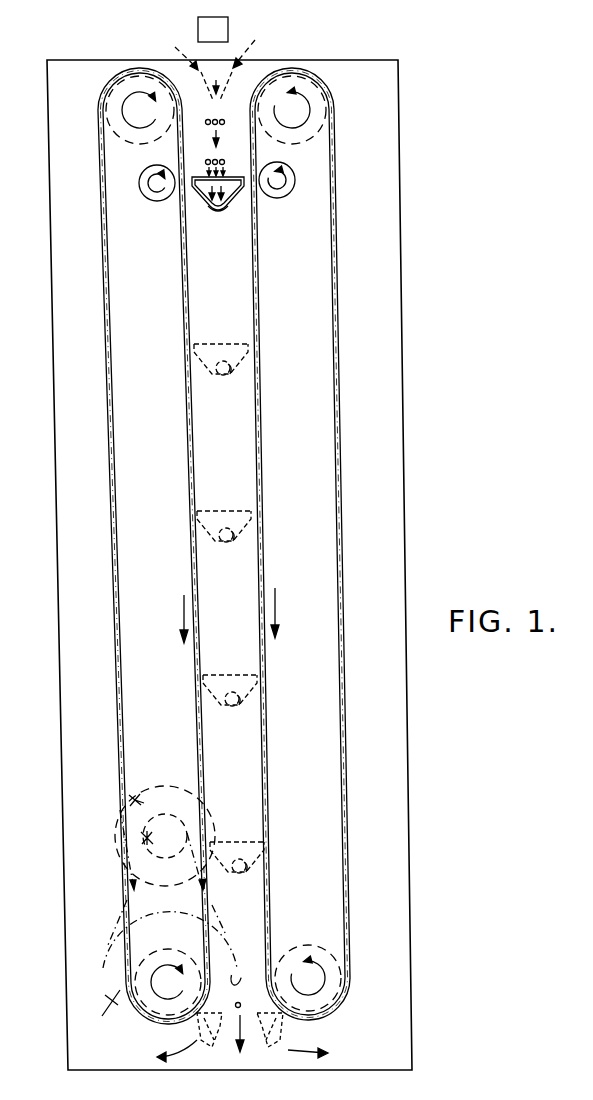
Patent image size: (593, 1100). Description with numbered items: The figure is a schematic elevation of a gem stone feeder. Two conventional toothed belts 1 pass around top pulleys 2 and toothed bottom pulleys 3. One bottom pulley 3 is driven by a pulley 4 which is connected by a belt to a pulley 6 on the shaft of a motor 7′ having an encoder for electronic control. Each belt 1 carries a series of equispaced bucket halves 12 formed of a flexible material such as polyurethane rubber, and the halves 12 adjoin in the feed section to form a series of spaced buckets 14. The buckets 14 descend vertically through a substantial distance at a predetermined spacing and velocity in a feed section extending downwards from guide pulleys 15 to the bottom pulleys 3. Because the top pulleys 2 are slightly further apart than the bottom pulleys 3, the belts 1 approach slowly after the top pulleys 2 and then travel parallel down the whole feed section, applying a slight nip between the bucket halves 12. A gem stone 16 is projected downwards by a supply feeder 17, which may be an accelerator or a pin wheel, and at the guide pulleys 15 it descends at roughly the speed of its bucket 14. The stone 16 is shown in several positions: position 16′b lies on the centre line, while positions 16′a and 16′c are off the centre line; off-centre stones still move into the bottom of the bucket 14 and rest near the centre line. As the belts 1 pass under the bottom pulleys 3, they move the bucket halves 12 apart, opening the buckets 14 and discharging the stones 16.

The toothed belt 1 is at (193, 438).
The top pulley 2 is at (122, 90).
The bottom pulley 3 is at (144, 1006).
The pulley 4 is at (102, 1013).
The pulley 6 is at (136, 846).
The motor 7′ is at (122, 792).
The bucket half 12 is at (185, 222).
The bucket 14 is at (200, 213).
The guide pulley 15 is at (147, 198).
The gem stone 16 is at (230, 378).
The late off-centre stone position 16′a is at (224, 118).
The late on-centre stone position 16′b is at (207, 118).
The late off-centre stone position 16′c is at (206, 122).
The supply feeder 17 is at (228, 30).